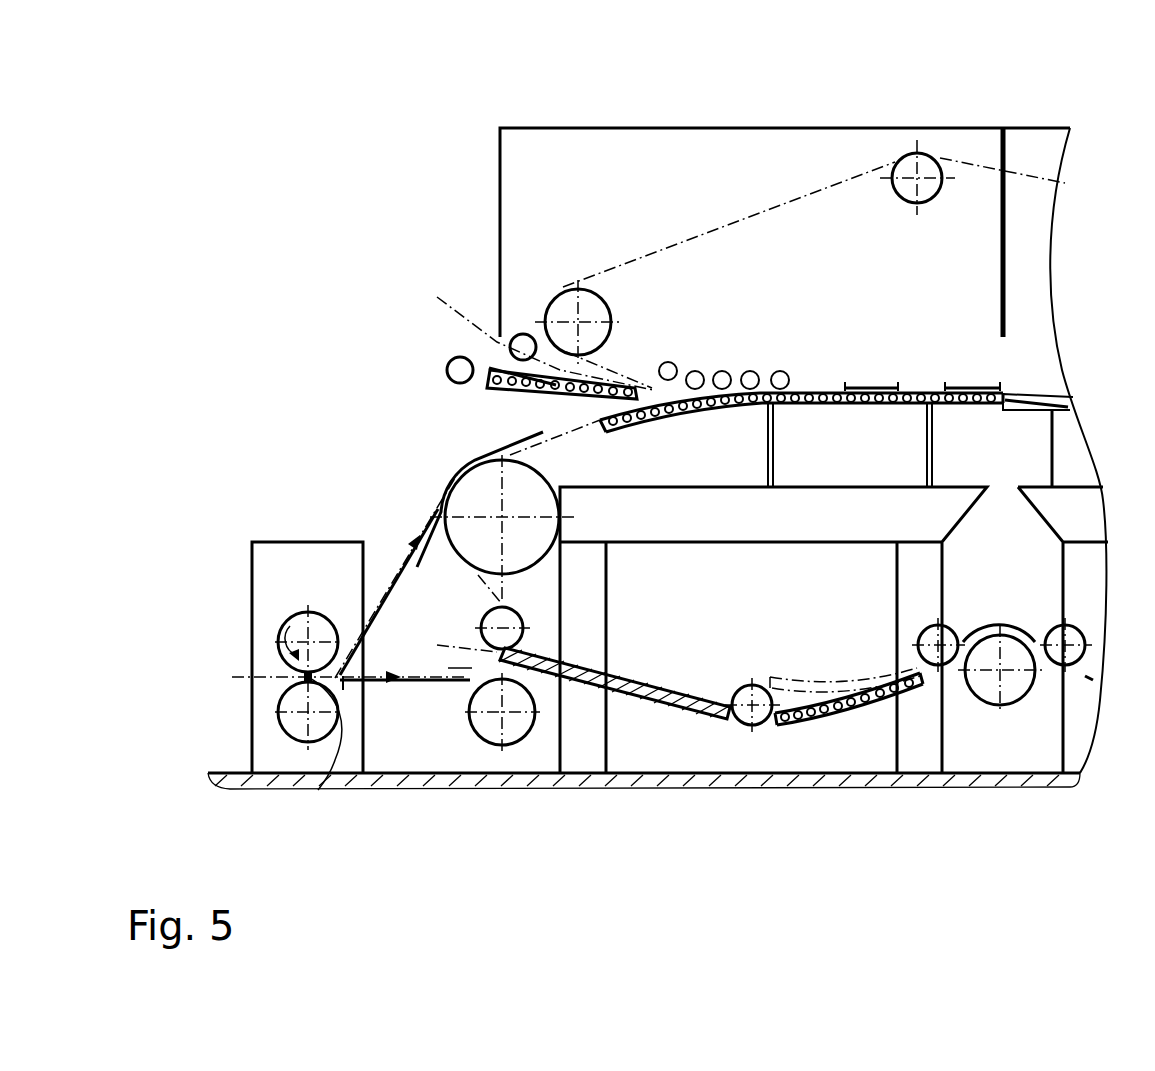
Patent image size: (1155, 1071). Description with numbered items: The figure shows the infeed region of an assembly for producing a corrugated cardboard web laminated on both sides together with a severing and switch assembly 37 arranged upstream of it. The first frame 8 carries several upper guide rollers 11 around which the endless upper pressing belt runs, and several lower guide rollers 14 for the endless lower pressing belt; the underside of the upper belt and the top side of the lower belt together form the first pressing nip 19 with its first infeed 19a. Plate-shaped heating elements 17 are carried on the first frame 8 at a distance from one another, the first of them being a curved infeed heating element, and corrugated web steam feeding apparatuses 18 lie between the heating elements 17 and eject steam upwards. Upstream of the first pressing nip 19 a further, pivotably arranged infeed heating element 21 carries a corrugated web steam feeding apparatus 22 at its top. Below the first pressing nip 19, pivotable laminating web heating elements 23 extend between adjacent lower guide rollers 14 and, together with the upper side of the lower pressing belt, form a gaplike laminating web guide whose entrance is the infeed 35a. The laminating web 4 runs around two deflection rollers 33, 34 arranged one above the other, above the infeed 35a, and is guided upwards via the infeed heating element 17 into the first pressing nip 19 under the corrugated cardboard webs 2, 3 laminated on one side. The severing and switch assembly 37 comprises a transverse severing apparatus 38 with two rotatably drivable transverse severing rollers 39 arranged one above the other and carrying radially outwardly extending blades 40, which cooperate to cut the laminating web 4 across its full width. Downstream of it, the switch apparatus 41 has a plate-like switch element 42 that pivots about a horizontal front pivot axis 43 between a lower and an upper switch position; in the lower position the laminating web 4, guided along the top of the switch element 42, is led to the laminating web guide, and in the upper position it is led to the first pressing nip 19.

The corrugated cardboard web laminated on one side 2 is at (440, 300).
The second corrugated cardboard web laminated on one side 3 is at (446, 371).
The laminating web 4 is at (480, 736).
The first frame 8 is at (812, 129).
The upper guide rollers 11 is at (562, 296).
The lower guide rollers 14 is at (520, 728).
The heating elements 17 is at (848, 402).
The corrugated web steam feeding apparatuses 18 is at (1030, 395).
The first pressing nip 19 is at (646, 361).
The first infeed 19a is at (690, 371).
The infeed heating element 21 is at (510, 405).
The corrugated web steam feeding apparatus 22 is at (487, 366).
The laminating web heating elements 23 is at (680, 708).
The deflection roller 33 is at (510, 642).
The deflection roller 34 is at (462, 507).
The infeed of the laminating web guide 35a is at (499, 746).
The severing and switch assembly 37 is at (242, 549).
The transverse severing apparatus 38 is at (252, 582).
The transverse severing rollers 39 is at (297, 703).
The blades 40 is at (338, 748).
The switch apparatus 41 is at (357, 682).
The switch element 42 is at (415, 684).
The pivot axis 43 is at (327, 672).